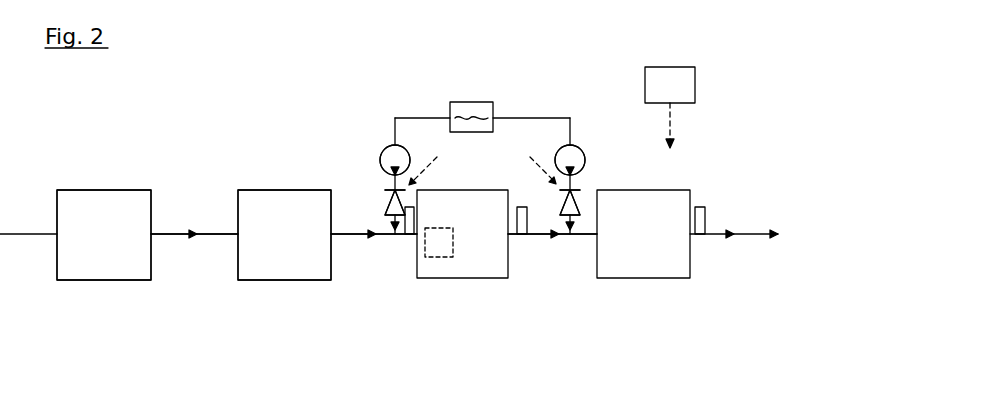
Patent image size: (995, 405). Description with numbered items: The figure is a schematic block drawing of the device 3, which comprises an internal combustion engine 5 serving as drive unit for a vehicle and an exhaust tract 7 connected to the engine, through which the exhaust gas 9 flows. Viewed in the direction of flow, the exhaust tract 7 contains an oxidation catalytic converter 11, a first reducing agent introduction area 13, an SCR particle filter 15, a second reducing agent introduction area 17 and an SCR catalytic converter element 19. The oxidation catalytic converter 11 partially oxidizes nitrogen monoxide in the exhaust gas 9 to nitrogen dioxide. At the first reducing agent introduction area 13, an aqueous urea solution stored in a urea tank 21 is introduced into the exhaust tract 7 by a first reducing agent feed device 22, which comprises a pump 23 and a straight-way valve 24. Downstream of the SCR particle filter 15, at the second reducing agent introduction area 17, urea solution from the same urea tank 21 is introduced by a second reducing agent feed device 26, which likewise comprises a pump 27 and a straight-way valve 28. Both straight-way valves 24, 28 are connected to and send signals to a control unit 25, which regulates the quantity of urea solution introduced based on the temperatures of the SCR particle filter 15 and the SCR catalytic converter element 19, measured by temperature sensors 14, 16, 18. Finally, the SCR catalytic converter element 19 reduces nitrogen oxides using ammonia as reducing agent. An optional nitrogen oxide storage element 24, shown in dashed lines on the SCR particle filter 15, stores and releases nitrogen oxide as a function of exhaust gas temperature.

The device 3 is at (93, 295).
The internal combustion engine 5 is at (103, 203).
The exhaust tract 7 is at (275, 295).
The exhaust gas 9 is at (195, 229).
The oxidation catalytic converter 11 is at (277, 205).
The first reducing agent introduction area 13 is at (390, 247).
The temperature sensor 14 is at (410, 234).
The SCR particle filter 15 is at (465, 268).
The temperature sensor 16 is at (521, 234).
The second reducing agent introduction area 17 is at (583, 240).
The temperature sensor 18 is at (697, 234).
The SCR catalytic converter element 19 is at (653, 268).
The urea tank 21 is at (468, 102).
The first reducing agent feed device 22 is at (385, 92).
The pump 23 is at (387, 150).
The straight-way valve 24 is at (443, 260).
The control unit 25 is at (680, 83).
The second reducing agent feed device 26 is at (637, 60).
The pump 27 is at (575, 157).
The straight-way valve 28 is at (577, 197).